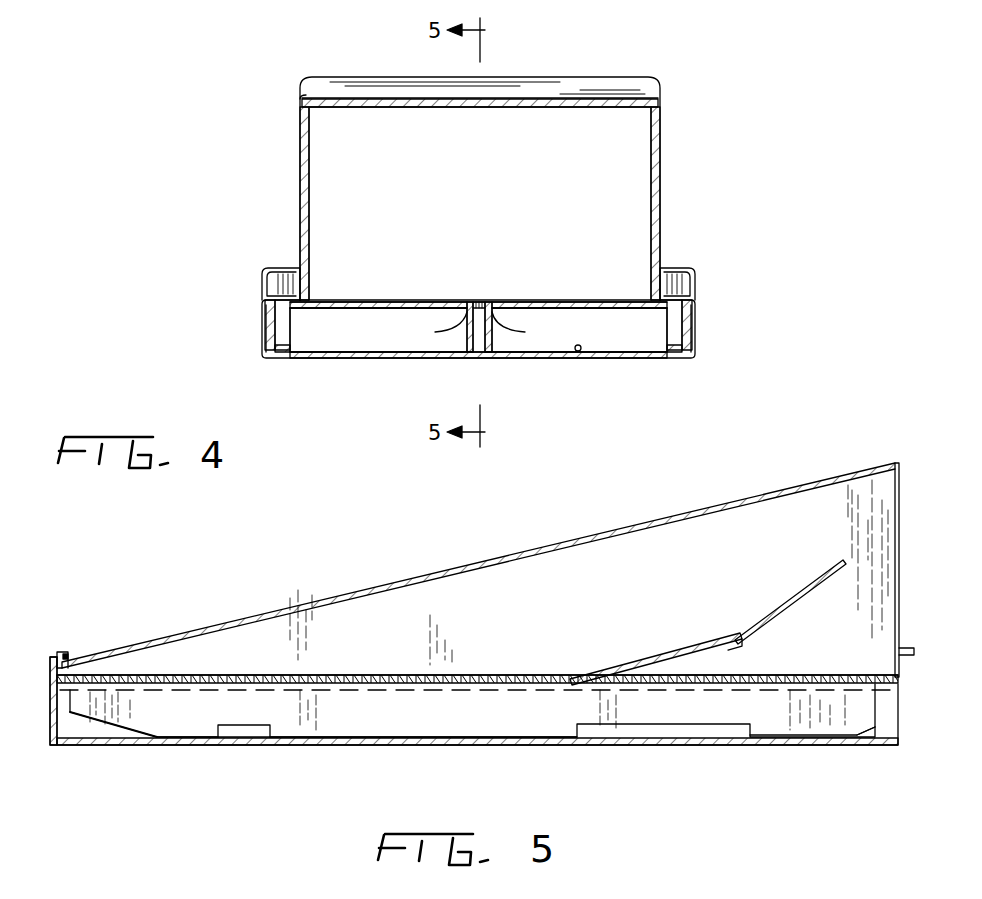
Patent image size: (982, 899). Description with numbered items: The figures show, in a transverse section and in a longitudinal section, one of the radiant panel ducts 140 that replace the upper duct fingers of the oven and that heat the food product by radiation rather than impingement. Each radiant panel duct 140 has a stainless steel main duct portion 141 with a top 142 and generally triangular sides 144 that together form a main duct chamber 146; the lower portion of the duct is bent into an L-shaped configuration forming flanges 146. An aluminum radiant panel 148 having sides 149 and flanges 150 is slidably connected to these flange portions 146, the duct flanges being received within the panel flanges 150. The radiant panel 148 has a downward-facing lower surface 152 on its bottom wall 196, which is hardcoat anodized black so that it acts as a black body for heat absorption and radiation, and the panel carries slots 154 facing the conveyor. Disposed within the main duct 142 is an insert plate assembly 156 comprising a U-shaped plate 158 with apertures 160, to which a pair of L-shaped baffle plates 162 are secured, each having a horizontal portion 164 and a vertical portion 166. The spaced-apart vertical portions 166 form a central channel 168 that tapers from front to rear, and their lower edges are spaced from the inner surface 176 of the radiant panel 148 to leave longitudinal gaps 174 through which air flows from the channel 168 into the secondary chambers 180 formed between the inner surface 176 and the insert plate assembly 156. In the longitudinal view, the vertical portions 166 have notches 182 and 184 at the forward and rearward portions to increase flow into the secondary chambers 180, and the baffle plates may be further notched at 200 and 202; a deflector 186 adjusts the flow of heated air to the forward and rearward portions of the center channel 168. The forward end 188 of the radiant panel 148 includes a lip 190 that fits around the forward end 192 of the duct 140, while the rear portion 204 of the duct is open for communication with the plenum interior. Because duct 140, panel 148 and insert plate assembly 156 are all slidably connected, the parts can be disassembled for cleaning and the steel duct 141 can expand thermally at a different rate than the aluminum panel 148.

In FIG. 4, the radiant panel duct 140 is at (677, 70).
In FIG. 5, the radiant panel duct 140 is at (375, 585).
In FIG. 4, the main duct portion 141 is at (300, 102).
In FIG. 4, the top 142 is at (572, 100).
In FIG. 4, the sides 144 is at (300, 155).
In FIG. 5, the sides 144 is at (582, 590).
In FIG. 4, the main duct chamber 146 is at (735, 274).
In FIG. 5, the main duct chamber 146 is at (407, 627).
In FIG. 4, the radiant panel 148 is at (700, 348).
In FIG. 5, the radiant panel 148 is at (52, 745).
In FIG. 4, the sides 149 is at (265, 325).
In FIG. 4, the flanges 150 is at (268, 272).
In FIG. 4, the lower surface 152 is at (470, 345).
In FIG. 5, the lower surface 152 is at (325, 745).
In FIG. 4, the slots 154 is at (303, 360).
In FIG. 4, the insert plate assembly 156 is at (563, 305).
In FIG. 4, the U-shaped plate 158 is at (405, 300).
In FIG. 4, the apertures 160 is at (465, 300).
In FIG. 5, the apertures 160 is at (222, 680).
In FIG. 4, the L-shaped baffle plates 162 is at (357, 302).
In FIG. 4, the horizontal portions 164 is at (548, 300).
In FIG. 4, the vertical portions 166 is at (458, 332).
In FIG. 5, the vertical portions 166 is at (188, 712).
In FIG. 4, the central channel 168 is at (479, 300).
In FIG. 4, the longitudinal gaps 174 is at (467, 360).
In FIG. 5, the longitudinal gaps 174 is at (516, 738).
In FIG. 4, the inner surface 176 is at (580, 352).
In FIG. 4, the secondary chambers 180 is at (478, 330).
In FIG. 5, the secondary chambers 180 is at (472, 710).
In FIG. 5, the notch 182 is at (245, 728).
In FIG. 5, the notch 184 is at (637, 725).
In FIG. 5, the deflector 186 is at (770, 615).
In FIG. 5, the forward end 188 is at (50, 685).
In FIG. 5, the lip 190 is at (60, 672).
In FIG. 5, the forward end 192 is at (70, 658).
In FIG. 4, the bottom wall 196 is at (343, 360).
In FIG. 5, the bottom wall 196 is at (280, 745).
In FIG. 5, the notch 200 is at (870, 736).
In FIG. 5, the notch 202 is at (105, 740).
In FIG. 5, the rear portion 204 is at (880, 510).